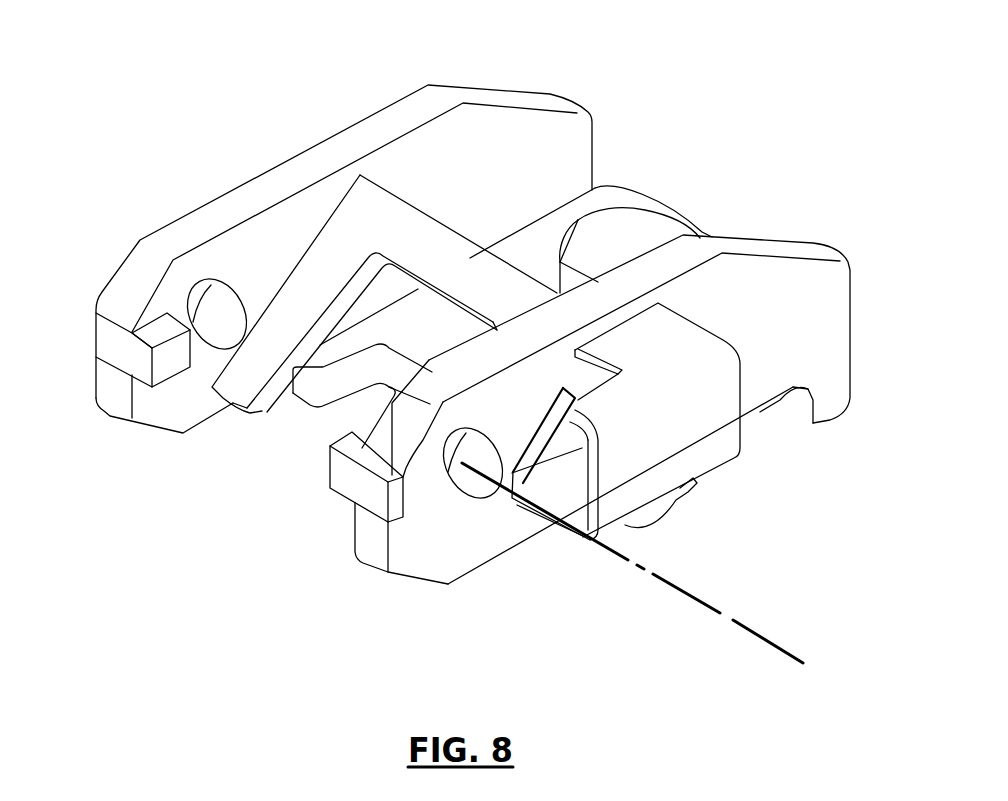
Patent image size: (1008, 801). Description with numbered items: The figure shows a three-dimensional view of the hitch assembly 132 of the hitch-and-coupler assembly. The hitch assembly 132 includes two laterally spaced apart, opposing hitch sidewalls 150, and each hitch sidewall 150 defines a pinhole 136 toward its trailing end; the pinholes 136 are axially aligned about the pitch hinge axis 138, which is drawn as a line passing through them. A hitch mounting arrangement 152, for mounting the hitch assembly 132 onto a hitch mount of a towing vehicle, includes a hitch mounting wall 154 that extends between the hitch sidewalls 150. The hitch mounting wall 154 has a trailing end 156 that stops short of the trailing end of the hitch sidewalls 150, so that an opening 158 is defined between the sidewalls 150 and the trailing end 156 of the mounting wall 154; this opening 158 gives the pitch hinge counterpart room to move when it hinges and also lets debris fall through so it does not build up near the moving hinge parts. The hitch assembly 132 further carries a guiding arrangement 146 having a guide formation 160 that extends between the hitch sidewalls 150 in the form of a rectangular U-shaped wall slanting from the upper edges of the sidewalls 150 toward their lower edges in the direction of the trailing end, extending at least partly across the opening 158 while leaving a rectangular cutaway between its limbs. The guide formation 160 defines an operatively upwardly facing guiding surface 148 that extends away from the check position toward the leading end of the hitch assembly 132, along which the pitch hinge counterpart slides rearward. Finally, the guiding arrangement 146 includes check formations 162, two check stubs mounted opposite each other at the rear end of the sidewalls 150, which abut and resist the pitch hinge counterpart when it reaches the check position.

The hitch assembly 132 is at (175, 89).
The pinhole 136 is at (456, 493).
The pitch hinge axis 138 is at (790, 632).
The guiding arrangement 146 is at (438, 180).
The guiding surface 148 is at (462, 284).
The hitch sidewall 150 is at (428, 100).
The hitch mounting arrangement 152 is at (645, 197).
The hitch mounting wall 154 is at (606, 205).
The trailing end of the hitch mounting wall 156 is at (363, 369).
The opening 158 is at (287, 437).
The guide formation 160 is at (470, 245).
The check formation 162 is at (125, 350).